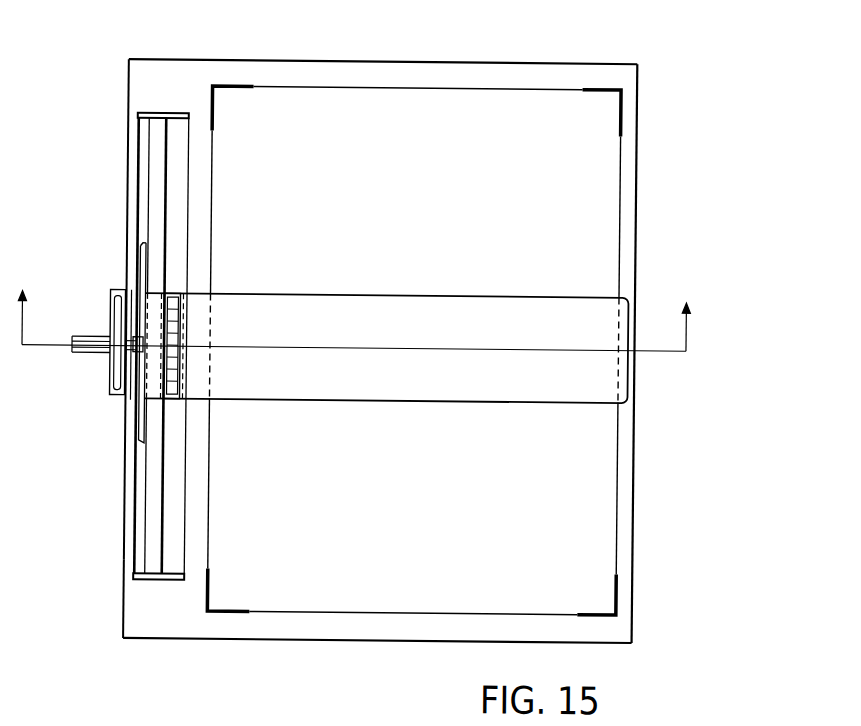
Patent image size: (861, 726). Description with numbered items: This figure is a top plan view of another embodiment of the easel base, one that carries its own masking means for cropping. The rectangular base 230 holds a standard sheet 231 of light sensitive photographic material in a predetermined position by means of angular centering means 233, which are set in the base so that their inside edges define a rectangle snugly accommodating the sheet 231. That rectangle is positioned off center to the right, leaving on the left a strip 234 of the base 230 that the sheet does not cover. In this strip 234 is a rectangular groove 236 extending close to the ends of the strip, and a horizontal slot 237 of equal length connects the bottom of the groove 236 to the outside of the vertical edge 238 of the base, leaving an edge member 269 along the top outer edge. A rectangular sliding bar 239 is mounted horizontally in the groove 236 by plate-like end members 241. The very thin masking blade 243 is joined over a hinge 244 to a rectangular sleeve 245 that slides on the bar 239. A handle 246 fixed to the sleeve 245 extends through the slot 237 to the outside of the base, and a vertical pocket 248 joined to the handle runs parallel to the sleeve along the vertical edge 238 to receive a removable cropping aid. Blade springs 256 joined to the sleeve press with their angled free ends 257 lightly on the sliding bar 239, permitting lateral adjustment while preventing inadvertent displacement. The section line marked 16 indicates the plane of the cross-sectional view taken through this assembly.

The rectangular base 230 is at (650, 144).
The standard sheet 231 is at (480, 85).
The angular centering means 233 is at (620, 592).
The strip 234 is at (160, 81).
The rectangular groove 236 is at (175, 564).
The horizontal slot 237 is at (129, 561).
The vertical edge 238 is at (126, 501).
The rectangular sliding bar 239 is at (145, 164).
The plate-like end members 241 is at (138, 126).
The masking blade 243 is at (428, 294).
The hinge 244 is at (180, 298).
The rectangular sleeve 245 is at (166, 398).
The handle 246 is at (72, 351).
The vertical pocket 248 is at (112, 389).
The blade springs 256 is at (140, 260).
The angled free ends 257 is at (136, 239).
The edge member 269 is at (128, 454).
The section line 16- 16 is at (360, 307).